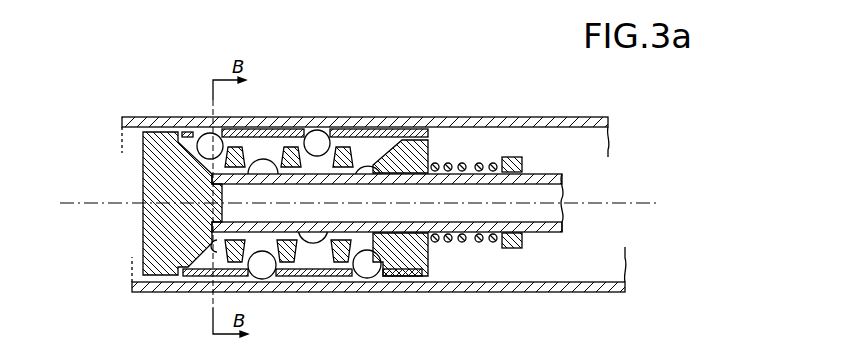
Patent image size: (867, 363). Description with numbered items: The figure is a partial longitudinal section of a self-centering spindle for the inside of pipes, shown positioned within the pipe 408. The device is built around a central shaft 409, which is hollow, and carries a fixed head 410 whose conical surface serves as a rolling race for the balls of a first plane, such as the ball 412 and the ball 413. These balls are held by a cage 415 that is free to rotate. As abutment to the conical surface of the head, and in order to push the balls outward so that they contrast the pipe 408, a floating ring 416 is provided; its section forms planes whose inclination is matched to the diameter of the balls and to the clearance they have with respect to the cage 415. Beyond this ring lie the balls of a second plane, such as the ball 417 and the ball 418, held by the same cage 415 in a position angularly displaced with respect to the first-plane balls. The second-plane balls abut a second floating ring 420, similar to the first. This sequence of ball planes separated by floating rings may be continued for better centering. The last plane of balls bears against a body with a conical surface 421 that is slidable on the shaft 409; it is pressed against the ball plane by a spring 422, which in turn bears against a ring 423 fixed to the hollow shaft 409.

The pipe 408 is at (128, 118).
The central shaft 409 is at (483, 174).
The fixed head 410 is at (167, 157).
The ball 412 is at (207, 142).
The ball 413 is at (213, 243).
The cage 415 is at (197, 272).
The floating ring 416 is at (235, 147).
The ball 417 is at (263, 165).
The ball 418 is at (262, 265).
The second floating ring 420 is at (303, 132).
The body with conical surface 421 is at (397, 158).
The spring 422 is at (463, 165).
The ring 423 is at (513, 243).